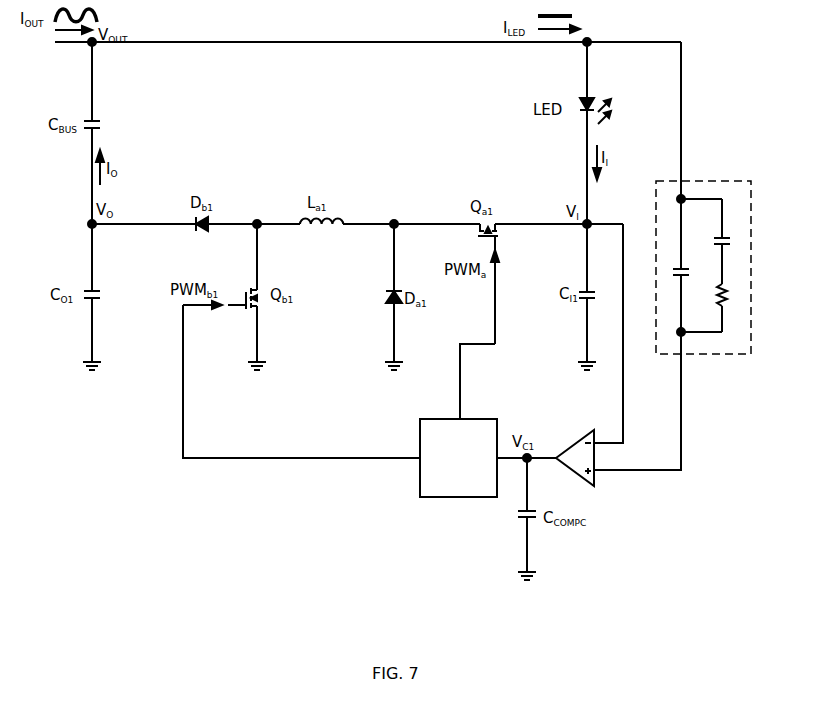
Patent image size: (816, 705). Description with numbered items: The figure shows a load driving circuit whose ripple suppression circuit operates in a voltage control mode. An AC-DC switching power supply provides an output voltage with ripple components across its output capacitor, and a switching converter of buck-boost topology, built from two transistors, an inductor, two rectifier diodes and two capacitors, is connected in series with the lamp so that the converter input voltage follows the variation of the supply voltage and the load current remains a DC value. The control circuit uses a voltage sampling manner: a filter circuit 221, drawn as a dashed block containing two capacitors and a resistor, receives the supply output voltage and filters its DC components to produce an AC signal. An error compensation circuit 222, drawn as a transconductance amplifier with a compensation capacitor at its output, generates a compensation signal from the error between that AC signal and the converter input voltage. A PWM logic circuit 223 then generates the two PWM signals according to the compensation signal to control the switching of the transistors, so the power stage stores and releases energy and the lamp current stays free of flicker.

The filter circuit 221 is at (722, 181).
The error compensation circuit 222 is at (575, 437).
The PWM logic circuit 223 is at (482, 418).